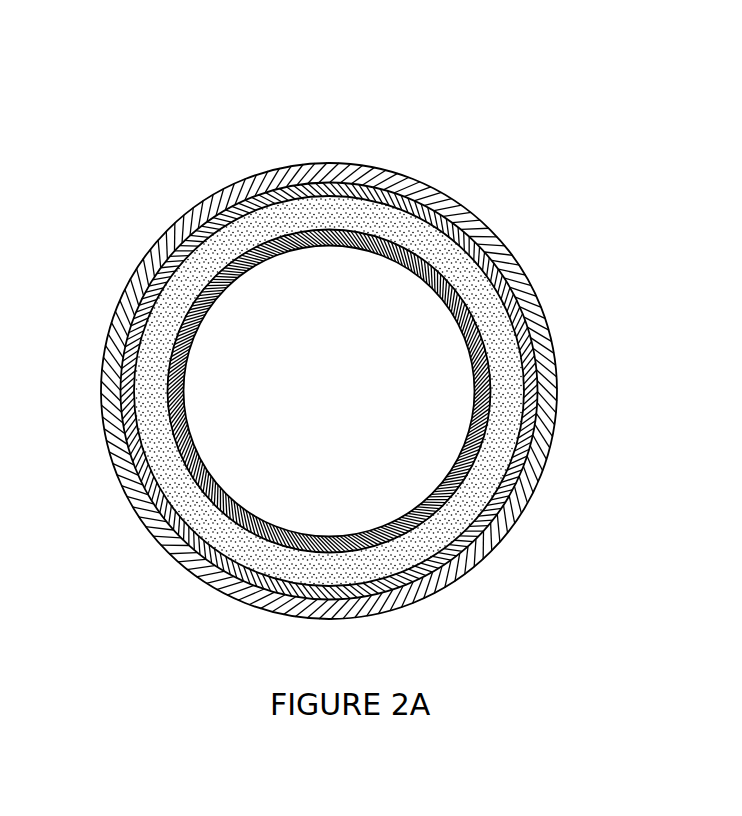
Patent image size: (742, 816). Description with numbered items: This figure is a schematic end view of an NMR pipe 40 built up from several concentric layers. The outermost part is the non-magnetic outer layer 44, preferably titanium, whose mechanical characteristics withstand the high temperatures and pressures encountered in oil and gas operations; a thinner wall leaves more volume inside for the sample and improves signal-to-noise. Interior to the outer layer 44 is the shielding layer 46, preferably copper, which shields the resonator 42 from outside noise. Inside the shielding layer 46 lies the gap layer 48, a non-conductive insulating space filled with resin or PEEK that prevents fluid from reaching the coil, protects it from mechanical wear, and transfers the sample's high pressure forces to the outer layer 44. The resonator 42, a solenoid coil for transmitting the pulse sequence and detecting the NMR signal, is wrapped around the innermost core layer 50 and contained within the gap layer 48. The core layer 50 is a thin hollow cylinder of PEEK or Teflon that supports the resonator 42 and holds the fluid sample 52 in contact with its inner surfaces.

The pipe 40 is at (308, 118).
The resonator 42 is at (460, 492).
The outer layer 44 is at (407, 172).
The shielding layer 46 is at (488, 240).
The gap layer 48 is at (490, 330).
The core layer 50 is at (485, 395).
The fluid sample 52 is at (346, 400).